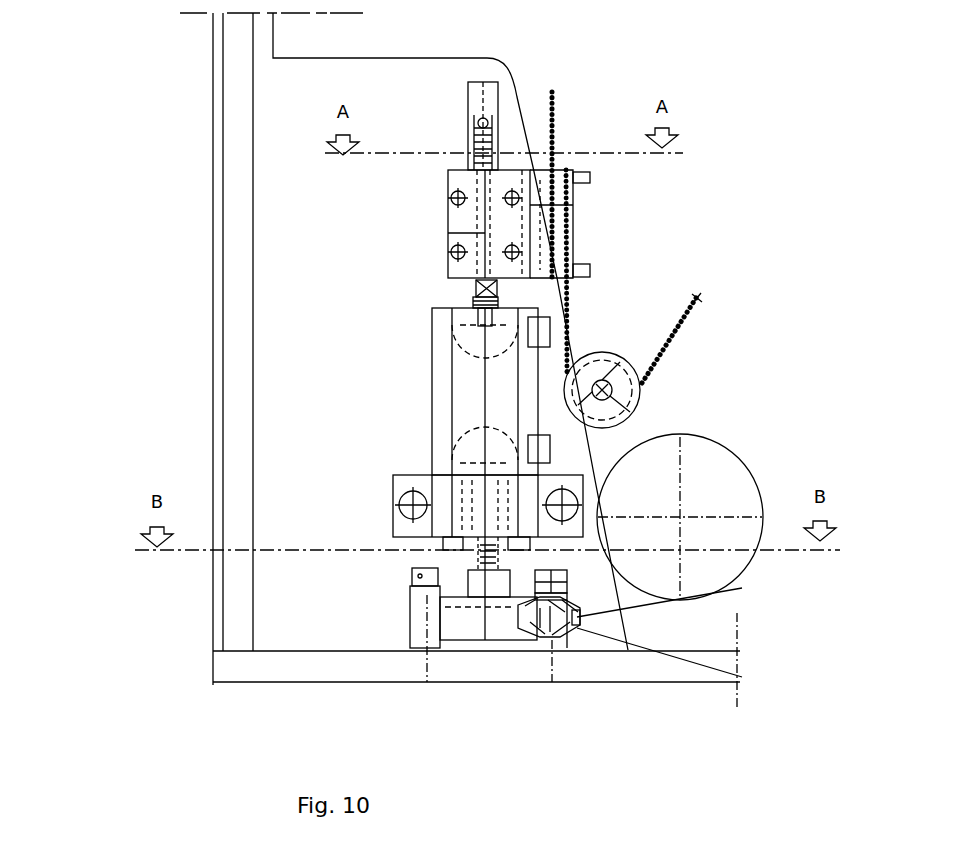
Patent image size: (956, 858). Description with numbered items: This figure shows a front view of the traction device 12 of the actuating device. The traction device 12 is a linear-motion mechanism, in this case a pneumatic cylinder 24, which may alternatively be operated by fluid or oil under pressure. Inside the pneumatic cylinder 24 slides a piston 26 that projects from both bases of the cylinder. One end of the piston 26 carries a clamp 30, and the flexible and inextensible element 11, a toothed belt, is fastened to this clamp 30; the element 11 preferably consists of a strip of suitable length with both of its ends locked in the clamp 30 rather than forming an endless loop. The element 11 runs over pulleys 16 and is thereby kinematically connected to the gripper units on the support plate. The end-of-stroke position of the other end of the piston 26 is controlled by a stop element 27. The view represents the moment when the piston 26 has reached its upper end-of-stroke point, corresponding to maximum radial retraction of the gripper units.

The flexible and inextensible element 11 is at (672, 338).
The traction device 12 is at (388, 338).
The pulleys 16 is at (604, 368).
The pneumatic cylinder 24 is at (465, 393).
The piston 26 is at (460, 232).
The stop element 27 is at (455, 617).
The clamp 30 is at (460, 218).